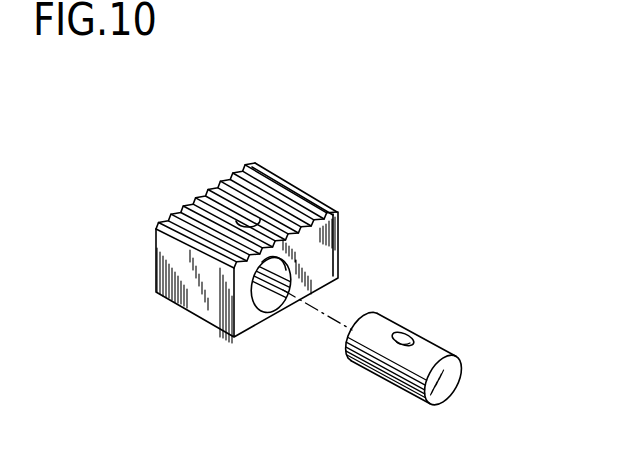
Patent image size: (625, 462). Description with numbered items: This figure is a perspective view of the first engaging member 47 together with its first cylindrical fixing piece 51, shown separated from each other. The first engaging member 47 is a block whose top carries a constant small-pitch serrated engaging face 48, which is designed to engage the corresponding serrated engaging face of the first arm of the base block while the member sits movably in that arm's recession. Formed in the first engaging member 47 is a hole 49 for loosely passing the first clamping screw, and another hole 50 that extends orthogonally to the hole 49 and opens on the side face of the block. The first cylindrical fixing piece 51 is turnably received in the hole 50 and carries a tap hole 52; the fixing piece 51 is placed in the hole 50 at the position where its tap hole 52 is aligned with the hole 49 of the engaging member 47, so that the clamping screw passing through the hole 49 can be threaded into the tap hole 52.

The first engaging member 47 is at (289, 242).
The serrated engaging face 48 is at (208, 192).
The hole 49 is at (245, 224).
The hole 50 is at (268, 305).
The first cylindrical fixing piece 51 is at (449, 316).
The tap hole 52 is at (410, 333).